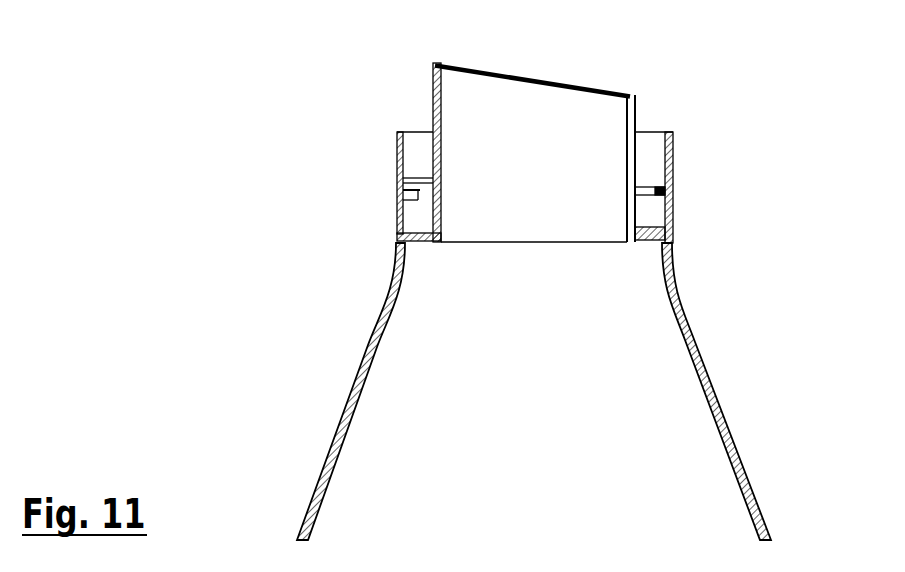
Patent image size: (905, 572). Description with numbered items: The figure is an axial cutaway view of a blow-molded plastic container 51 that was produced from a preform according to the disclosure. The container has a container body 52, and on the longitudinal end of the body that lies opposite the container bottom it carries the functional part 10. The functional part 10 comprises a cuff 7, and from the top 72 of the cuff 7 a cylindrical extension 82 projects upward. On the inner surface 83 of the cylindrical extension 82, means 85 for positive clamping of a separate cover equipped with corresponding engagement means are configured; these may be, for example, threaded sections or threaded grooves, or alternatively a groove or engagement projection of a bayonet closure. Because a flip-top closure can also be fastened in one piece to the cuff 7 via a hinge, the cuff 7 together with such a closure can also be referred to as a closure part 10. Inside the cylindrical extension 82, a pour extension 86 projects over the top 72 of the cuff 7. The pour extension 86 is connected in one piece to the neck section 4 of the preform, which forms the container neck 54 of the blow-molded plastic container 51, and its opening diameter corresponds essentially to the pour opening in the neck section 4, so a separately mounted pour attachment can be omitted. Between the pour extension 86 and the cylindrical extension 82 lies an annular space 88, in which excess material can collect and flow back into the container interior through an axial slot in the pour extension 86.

The functional part 10 is at (582, 178).
The plastic container 51 is at (446, 324).
The container body 52 is at (312, 510).
The container neck 54 is at (443, 243).
The neck section 4 is at (534, 295).
The cuff 7 is at (673, 232).
The top 72 is at (418, 215).
The cylindrical extension 82 is at (673, 163).
The inner surface 83 is at (647, 138).
The means for positive clamping 85 is at (665, 188).
The pour extension 86 is at (433, 107).
The annular space 88 is at (418, 150).